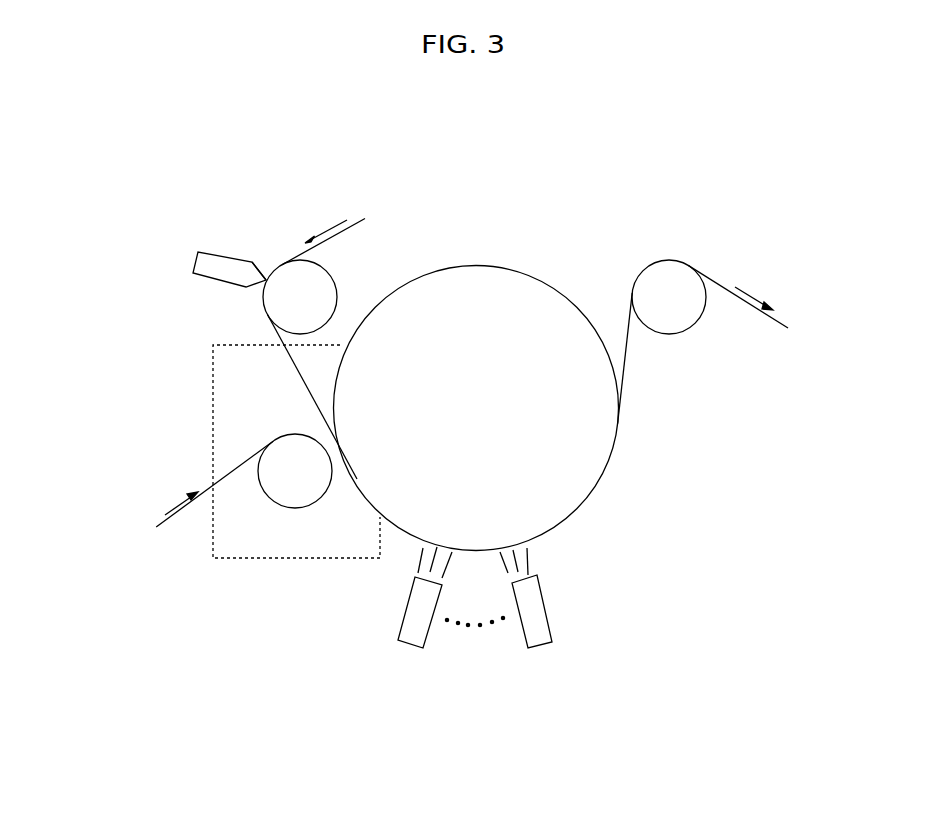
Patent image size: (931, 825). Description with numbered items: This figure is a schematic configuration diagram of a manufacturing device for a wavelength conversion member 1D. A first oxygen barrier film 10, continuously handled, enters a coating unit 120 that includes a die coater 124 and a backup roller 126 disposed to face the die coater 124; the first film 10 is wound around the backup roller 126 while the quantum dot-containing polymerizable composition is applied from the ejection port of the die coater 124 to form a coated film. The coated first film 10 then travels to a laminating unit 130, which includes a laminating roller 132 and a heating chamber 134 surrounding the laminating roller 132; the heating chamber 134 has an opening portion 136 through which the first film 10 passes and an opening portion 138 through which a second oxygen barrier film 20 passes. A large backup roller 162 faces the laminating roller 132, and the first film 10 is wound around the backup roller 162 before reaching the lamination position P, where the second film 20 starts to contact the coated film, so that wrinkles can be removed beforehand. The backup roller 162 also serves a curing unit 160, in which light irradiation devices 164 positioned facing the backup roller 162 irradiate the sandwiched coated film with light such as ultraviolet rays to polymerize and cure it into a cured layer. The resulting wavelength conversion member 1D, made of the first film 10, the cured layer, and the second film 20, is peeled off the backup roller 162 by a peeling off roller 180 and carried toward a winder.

The first oxygen barrier film 10 is at (351, 222).
The second oxygen barrier film 20 is at (170, 528).
The coating unit 120 is at (193, 263).
The die coater 124 is at (227, 252).
The backup roller 126 is at (331, 281).
The laminating unit 130 is at (160, 397).
The laminating roller 132 is at (295, 509).
The heating chamber 134 is at (213, 362).
The opening portion 136 is at (278, 335).
The opening portion 138 is at (213, 484).
The curing unit 160 is at (466, 705).
The backup roller 162 is at (477, 265).
The light irradiation device 164 is at (412, 652).
The peeling off roller 180 is at (668, 259).
The wavelength conversion member 1D is at (628, 357).
The lamination position P is at (375, 475).